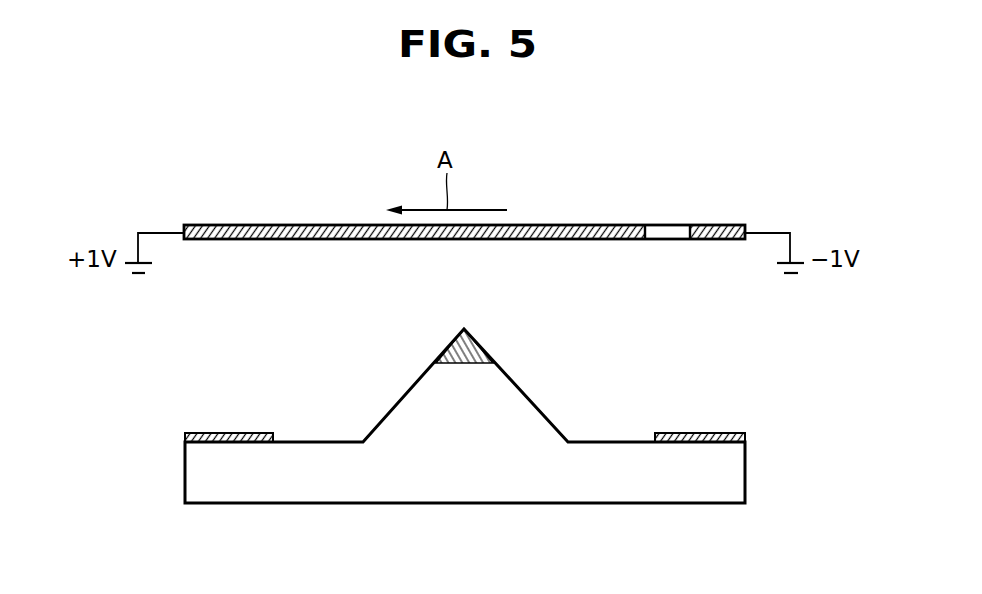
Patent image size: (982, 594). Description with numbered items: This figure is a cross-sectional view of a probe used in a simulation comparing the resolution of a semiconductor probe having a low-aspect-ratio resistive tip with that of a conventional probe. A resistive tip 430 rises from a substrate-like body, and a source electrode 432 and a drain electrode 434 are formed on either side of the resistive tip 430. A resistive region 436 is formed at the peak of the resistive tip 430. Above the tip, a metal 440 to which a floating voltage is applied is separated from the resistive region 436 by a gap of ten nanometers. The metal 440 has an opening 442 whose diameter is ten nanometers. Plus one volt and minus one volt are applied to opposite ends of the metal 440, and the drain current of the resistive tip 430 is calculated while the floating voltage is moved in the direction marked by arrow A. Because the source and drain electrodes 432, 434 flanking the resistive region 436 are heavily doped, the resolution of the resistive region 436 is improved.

The resistive tip 430 is at (386, 376).
The source electrode 432 is at (185, 437).
The drain electrode 434 is at (748, 438).
The resistive region 436 is at (460, 364).
The metal 440 is at (600, 225).
The opening 442 is at (671, 225).